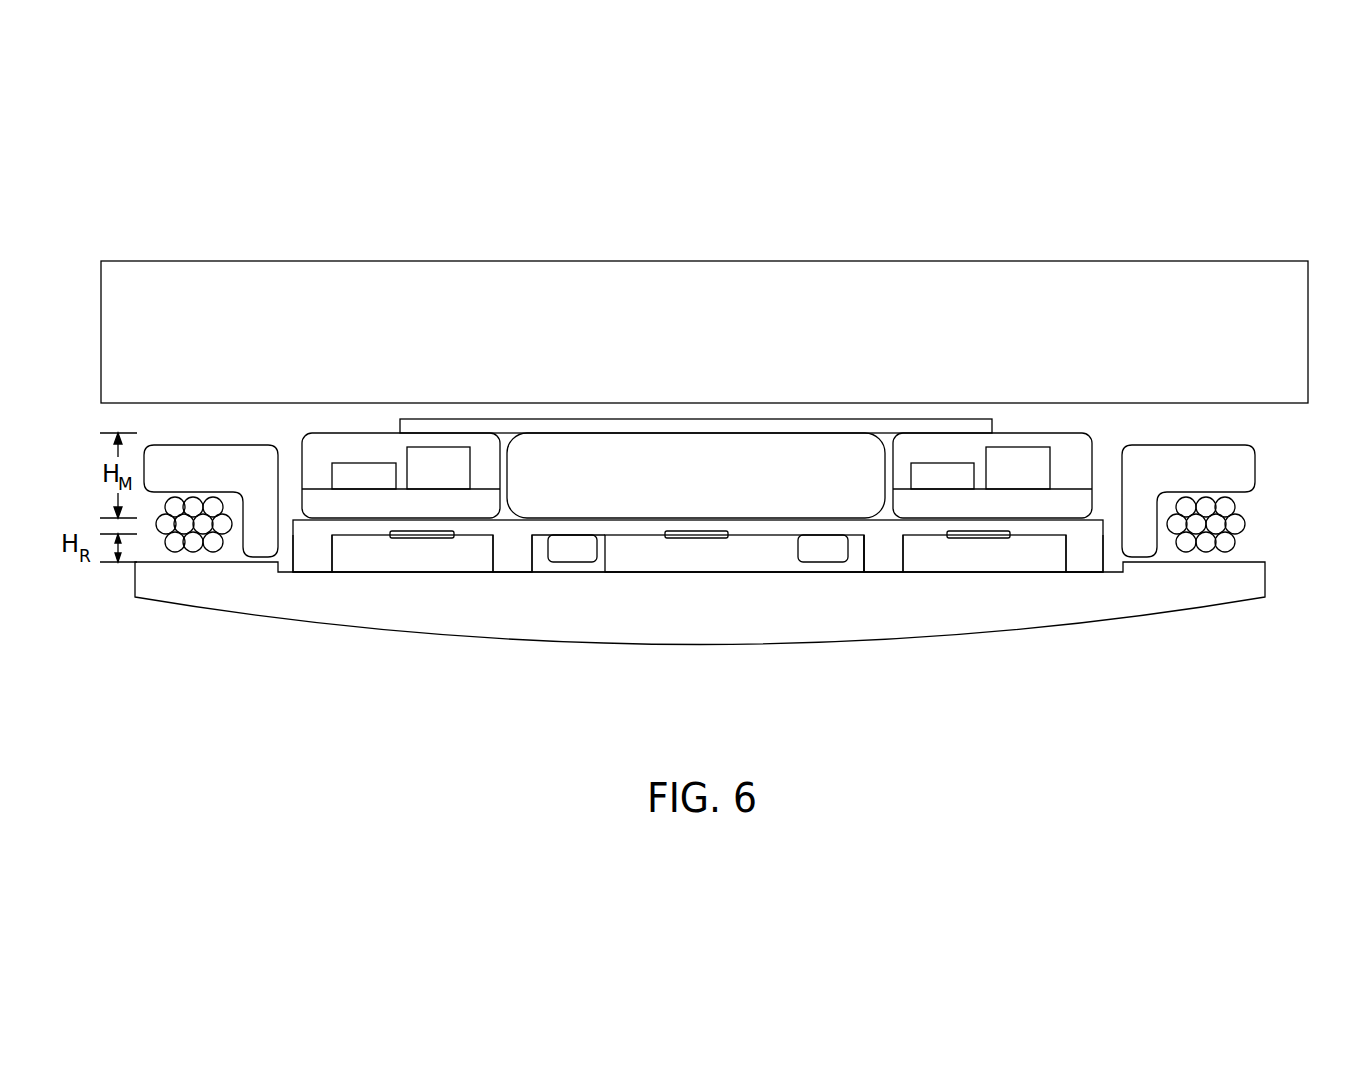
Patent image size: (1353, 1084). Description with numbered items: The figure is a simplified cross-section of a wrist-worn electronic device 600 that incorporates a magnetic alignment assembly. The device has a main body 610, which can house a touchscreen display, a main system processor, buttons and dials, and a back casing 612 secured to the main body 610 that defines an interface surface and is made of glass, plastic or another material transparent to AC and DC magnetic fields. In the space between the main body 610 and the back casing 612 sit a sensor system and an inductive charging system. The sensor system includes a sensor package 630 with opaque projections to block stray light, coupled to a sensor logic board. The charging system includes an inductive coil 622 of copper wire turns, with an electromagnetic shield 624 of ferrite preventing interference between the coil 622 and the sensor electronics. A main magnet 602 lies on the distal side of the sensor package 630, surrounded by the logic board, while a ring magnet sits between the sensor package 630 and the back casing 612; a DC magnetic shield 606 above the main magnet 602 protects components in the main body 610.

The electronic device 600 is at (133, 215).
The main body 610 is at (1110, 261).
The DC magnetic shield 606 is at (855, 419).
The main magnet 602 is at (677, 486).
The sensor package 630 is at (607, 572).
The electromagnetic shield 624 is at (1255, 470).
The inductive coil 622 is at (1244, 524).
The back casing 612 is at (1167, 597).